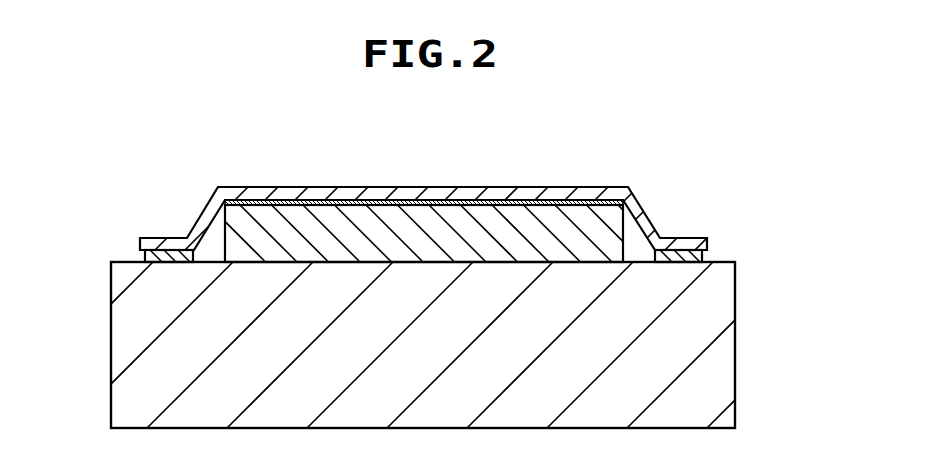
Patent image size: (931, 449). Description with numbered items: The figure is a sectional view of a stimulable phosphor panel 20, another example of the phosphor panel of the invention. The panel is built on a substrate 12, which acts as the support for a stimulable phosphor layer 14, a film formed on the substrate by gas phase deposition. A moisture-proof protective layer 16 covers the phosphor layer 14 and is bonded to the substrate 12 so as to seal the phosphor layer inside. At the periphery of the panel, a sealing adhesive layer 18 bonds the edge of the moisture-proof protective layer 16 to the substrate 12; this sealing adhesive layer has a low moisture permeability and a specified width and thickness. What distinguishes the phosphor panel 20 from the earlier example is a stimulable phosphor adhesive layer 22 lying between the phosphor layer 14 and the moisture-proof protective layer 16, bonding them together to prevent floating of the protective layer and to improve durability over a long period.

The substrate 12 is at (728, 351).
The stimulable phosphor layer 14 is at (615, 222).
The moisture-proof protective layer 16 is at (548, 187).
The sealing adhesive layer 18 is at (148, 254).
The phosphor panel 20 is at (627, 141).
The stimulable phosphor adhesive layer 22 is at (632, 194).